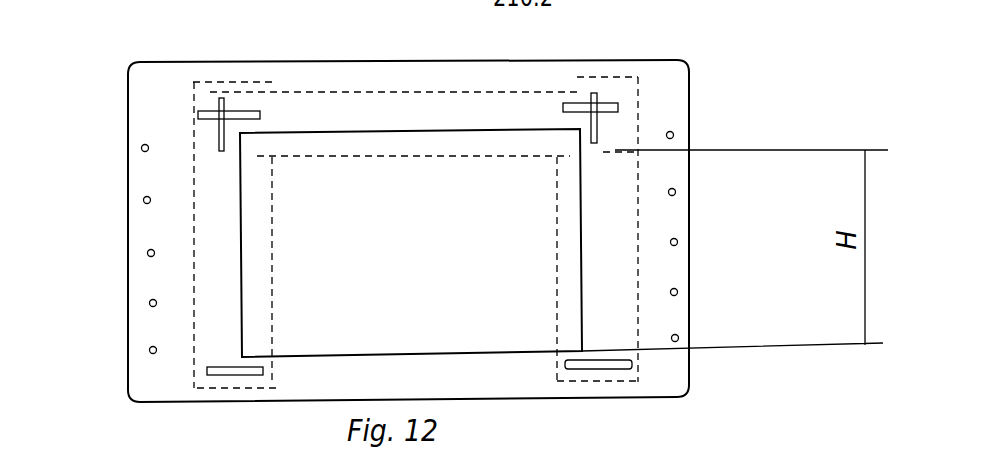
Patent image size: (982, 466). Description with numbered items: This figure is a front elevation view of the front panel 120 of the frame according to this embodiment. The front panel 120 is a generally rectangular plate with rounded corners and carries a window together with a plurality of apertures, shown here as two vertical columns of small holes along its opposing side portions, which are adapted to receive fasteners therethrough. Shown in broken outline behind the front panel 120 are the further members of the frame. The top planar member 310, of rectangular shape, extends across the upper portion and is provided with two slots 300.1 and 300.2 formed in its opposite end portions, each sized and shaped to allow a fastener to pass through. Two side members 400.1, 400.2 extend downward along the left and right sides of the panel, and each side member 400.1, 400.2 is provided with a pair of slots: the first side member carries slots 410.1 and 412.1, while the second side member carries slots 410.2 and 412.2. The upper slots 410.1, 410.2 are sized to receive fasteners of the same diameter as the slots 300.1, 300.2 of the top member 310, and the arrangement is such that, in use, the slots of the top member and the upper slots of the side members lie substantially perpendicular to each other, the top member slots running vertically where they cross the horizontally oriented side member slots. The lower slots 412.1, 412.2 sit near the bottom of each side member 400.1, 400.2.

The front panel 120 is at (112, 122).
The top planar member 310 is at (337, 110).
The slot 300.1 is at (218, 128).
The slot 300.2 is at (600, 125).
The side member 400.1 is at (228, 230).
The side member 400.2 is at (607, 215).
The slot 410.1 is at (255, 113).
The slot 410.2 is at (578, 106).
The slot 412.1 is at (205, 370).
The slot 412.2 is at (600, 363).